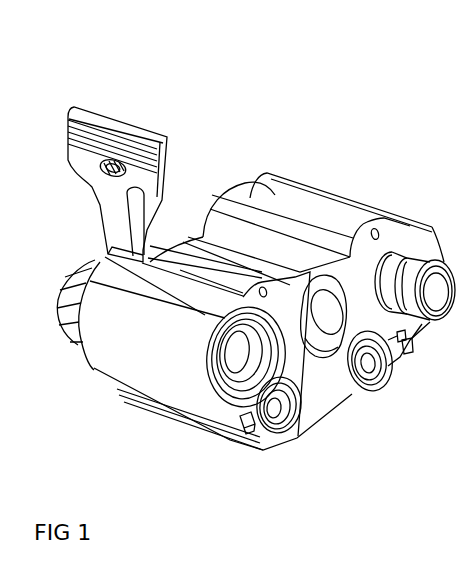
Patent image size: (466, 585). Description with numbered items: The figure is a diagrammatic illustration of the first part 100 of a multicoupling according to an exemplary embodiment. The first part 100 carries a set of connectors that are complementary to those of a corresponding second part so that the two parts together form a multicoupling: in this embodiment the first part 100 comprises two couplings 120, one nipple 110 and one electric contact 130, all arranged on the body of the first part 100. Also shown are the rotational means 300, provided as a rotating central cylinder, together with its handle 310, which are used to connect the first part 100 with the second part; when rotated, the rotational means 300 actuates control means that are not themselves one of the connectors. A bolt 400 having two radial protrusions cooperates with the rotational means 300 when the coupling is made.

The first part 100 is at (108, 342).
The nipple 110 is at (422, 270).
The coupling 120 is at (237, 358).
The electric contact 130 is at (363, 370).
The rotational means 300 is at (320, 310).
The handle 310 is at (155, 135).
The bolt 400 is at (465, 415).